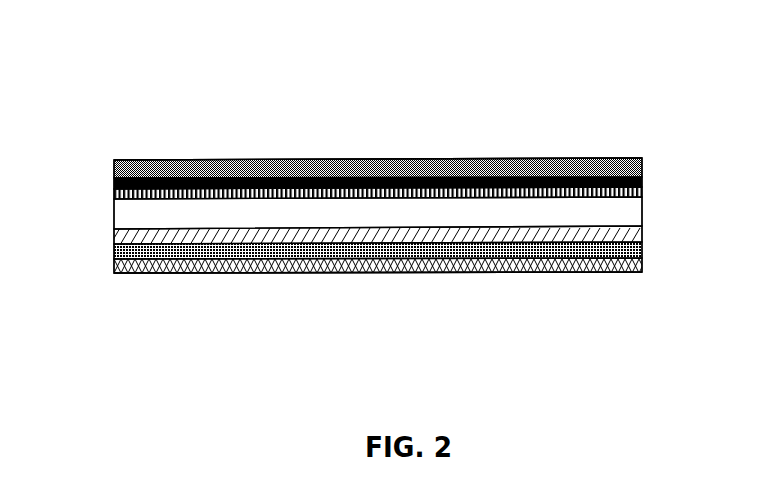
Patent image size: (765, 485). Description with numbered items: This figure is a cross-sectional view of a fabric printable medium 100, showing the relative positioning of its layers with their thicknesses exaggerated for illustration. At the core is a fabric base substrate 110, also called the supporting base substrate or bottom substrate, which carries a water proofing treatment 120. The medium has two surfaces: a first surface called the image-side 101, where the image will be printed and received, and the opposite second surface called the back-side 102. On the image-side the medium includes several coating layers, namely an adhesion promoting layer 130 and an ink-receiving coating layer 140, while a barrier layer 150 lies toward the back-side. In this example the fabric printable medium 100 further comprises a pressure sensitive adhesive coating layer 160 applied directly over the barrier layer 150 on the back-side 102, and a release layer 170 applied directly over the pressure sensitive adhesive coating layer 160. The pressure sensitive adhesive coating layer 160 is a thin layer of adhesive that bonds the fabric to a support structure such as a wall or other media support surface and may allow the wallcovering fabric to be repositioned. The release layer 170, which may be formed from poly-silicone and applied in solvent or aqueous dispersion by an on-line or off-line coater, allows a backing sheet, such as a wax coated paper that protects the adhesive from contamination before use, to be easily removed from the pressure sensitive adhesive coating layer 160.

The fabric printable medium 100 is at (537, 109).
The image-side 101 is at (222, 131).
The back-side 102 is at (221, 313).
The fabric base substrate 110 is at (643, 210).
The water proofing treatment 120 is at (643, 197).
The adhesion promoting layer 130 is at (113, 193).
The ink-receiving coating layer 140 is at (643, 160).
The barrier layer 150 is at (113, 239).
The pressure sensitive adhesive coating layer 160 is at (113, 253).
The release layer 170 is at (643, 263).